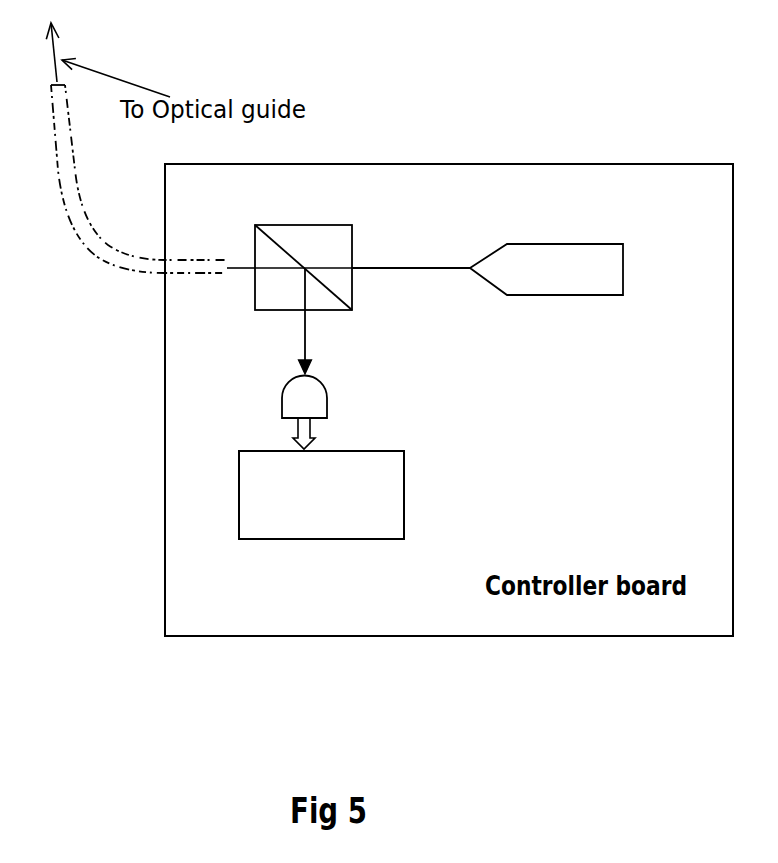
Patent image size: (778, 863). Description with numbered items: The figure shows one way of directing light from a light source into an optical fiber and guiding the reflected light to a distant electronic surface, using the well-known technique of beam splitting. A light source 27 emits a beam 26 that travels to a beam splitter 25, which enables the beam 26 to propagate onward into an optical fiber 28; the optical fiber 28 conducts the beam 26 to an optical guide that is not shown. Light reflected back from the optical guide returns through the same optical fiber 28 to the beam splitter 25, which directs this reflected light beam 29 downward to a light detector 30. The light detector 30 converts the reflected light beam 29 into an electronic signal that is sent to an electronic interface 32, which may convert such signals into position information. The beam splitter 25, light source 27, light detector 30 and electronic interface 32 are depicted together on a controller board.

The beam splitter 25 is at (333, 238).
The beam 26 is at (408, 261).
The light source 27 is at (547, 277).
The optical fiber 28 is at (97, 263).
The reflected light beam 29 is at (295, 333).
The light detector 30 is at (297, 400).
The electronic interface 32 is at (321, 495).